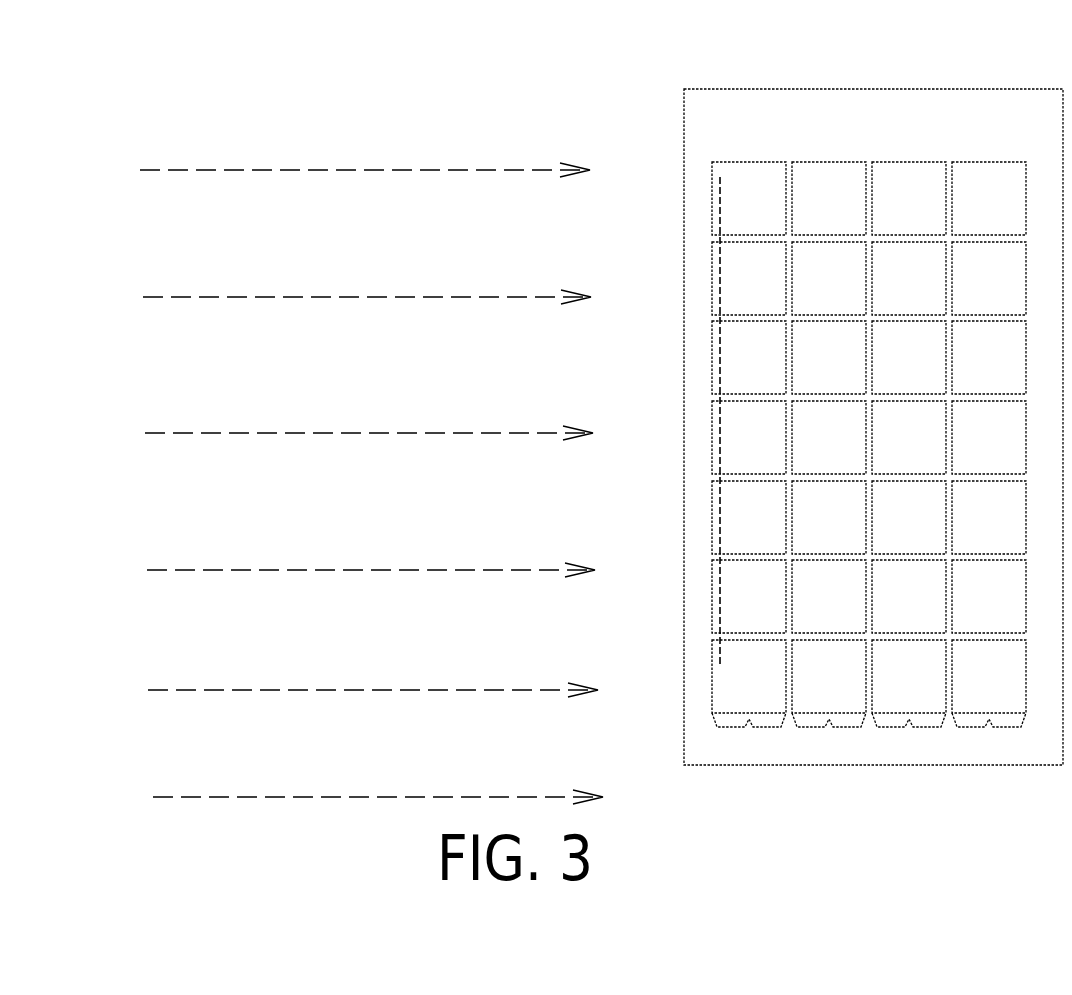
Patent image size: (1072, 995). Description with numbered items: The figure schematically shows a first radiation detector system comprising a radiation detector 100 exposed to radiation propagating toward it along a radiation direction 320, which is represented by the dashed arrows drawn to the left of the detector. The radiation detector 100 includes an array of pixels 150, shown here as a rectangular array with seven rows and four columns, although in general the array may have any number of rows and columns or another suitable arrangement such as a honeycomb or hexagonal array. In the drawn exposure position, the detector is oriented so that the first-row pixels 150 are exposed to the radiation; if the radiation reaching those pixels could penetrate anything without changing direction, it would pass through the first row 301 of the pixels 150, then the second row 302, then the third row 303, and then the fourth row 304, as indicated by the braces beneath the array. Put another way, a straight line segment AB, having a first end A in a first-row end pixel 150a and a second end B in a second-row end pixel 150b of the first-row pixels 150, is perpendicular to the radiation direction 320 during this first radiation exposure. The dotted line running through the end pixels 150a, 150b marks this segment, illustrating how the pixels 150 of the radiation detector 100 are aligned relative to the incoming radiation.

The radiation detector 100 is at (684, 135).
The pixel 150 is at (869, 437).
The first-row end pixel 150a is at (782, 222).
The second-row end pixel 150b is at (782, 708).
The first row of pixels 301 is at (749, 738).
The second row of pixels 302 is at (829, 738).
The third row of pixels 303 is at (909, 738).
The fourth row of pixels 304 is at (989, 738).
The radiation direction 320 is at (247, 170).